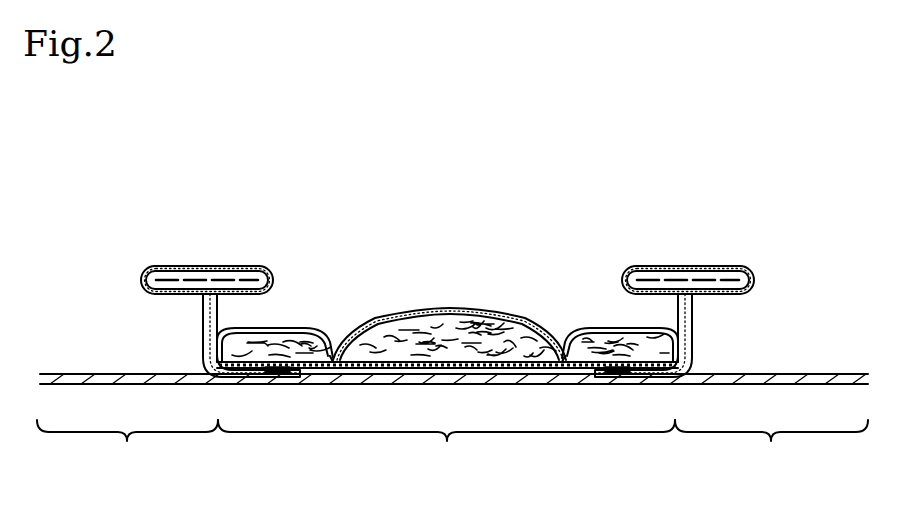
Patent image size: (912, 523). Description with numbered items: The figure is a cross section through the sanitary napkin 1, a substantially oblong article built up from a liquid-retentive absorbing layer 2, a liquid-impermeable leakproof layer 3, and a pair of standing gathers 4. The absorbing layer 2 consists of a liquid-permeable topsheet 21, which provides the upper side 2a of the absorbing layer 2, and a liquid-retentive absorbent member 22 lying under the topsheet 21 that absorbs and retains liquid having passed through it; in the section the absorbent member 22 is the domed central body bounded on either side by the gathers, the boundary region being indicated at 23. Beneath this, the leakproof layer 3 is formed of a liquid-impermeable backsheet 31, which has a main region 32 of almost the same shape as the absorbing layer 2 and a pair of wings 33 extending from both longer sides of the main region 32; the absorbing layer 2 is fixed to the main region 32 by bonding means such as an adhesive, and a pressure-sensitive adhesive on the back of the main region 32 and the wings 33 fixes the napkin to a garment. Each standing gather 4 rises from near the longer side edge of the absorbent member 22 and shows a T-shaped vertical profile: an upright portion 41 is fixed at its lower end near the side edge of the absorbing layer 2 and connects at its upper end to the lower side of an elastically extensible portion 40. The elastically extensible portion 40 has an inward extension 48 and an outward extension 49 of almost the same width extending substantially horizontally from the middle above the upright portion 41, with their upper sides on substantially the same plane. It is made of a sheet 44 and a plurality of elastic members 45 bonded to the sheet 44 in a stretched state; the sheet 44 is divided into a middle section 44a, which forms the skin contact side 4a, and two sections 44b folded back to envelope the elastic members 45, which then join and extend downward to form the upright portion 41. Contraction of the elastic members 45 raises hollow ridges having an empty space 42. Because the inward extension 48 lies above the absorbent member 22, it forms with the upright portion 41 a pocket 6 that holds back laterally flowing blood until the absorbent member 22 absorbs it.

The sanitary napkin 1 is at (727, 156).
The absorbing layer 2 is at (530, 233).
The upper side of the absorbing layer 2a is at (218, 332).
The topsheet 21 is at (447, 310).
The absorbent member 22 is at (487, 326).
The boundary groove 23 is at (331, 353).
The leakproof layer 3 is at (460, 384).
The backsheet 31 is at (585, 384).
The main region 32 is at (446, 453).
The wings 33 is at (452, 453).
The standing gathers 4 is at (124, 267).
The skin contact side 4a is at (168, 257).
The elastically extensible portion 40 is at (446, 236).
The upright portion 41 is at (192, 322).
The empty space 42 is at (638, 265).
The sheet 44 is at (205, 257).
The middle section 44a is at (178, 266).
The sections 44b is at (174, 297).
The elastic members 45 is at (229, 265).
The inward extension 48 is at (261, 265).
The outward extension 49 is at (141, 287).
The pocket 6 is at (293, 385).